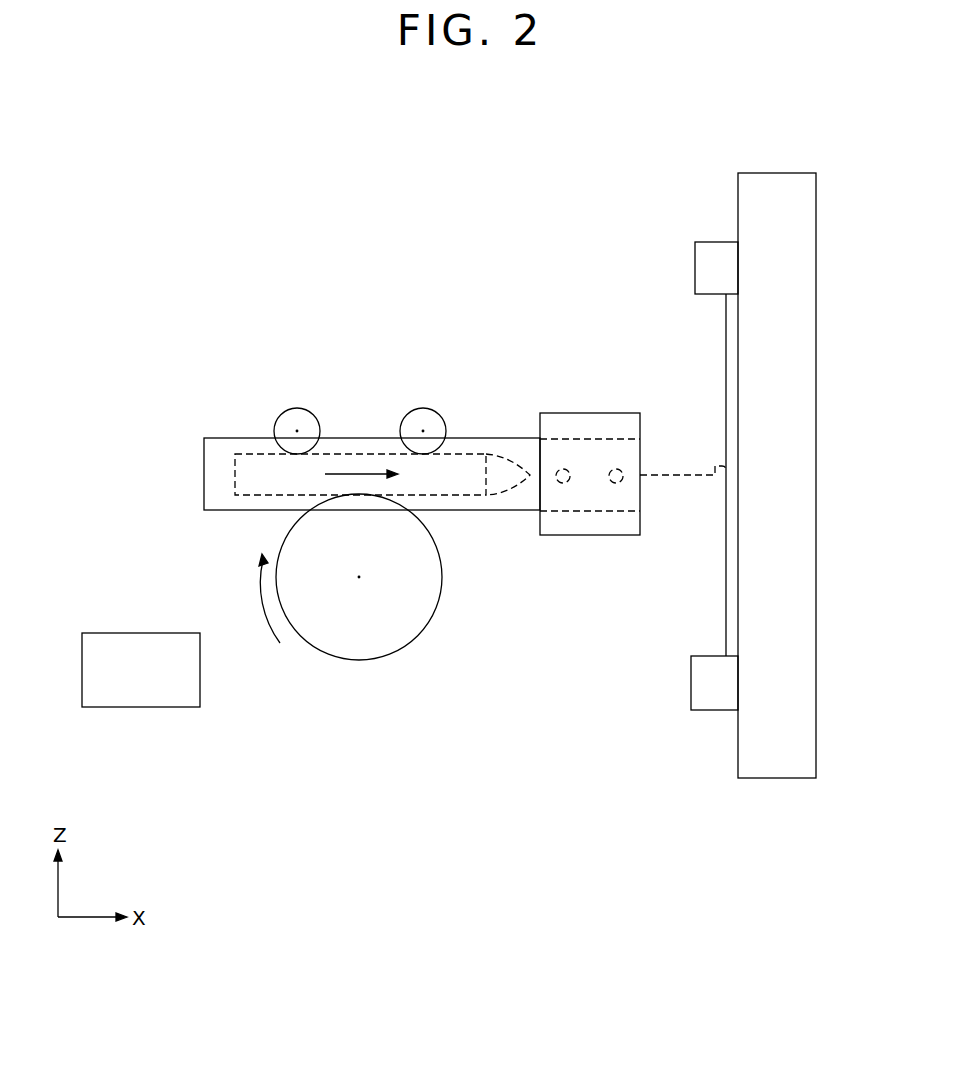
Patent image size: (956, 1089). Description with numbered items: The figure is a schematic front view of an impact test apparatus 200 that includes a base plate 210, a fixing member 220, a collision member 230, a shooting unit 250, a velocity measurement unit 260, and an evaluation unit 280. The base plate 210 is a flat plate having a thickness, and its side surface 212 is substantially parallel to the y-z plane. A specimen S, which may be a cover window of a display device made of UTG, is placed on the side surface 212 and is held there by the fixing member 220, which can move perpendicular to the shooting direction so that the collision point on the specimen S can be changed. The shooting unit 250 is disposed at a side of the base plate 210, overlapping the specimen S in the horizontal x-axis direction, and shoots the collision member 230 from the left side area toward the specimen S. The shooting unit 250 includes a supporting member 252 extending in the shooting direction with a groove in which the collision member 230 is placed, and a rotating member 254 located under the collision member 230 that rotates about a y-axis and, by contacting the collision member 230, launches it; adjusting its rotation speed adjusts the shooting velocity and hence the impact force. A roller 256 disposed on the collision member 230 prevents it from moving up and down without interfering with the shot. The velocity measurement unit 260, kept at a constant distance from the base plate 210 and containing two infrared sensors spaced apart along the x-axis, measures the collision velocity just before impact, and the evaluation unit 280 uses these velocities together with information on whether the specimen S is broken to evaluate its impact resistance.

The impact test apparatus 200 is at (177, 233).
The base plate 210 is at (745, 201).
The side surface 212 is at (736, 759).
The fixing member 220 is at (700, 268).
The specimen S is at (730, 331).
The collision member 230 is at (355, 452).
The shooting unit 250 is at (184, 433).
The supporting member 252 is at (222, 437).
The rotating member 254 is at (358, 661).
The roller 256 is at (296, 416).
The velocity measurement unit 260 is at (592, 420).
The evaluation unit 280 is at (142, 708).